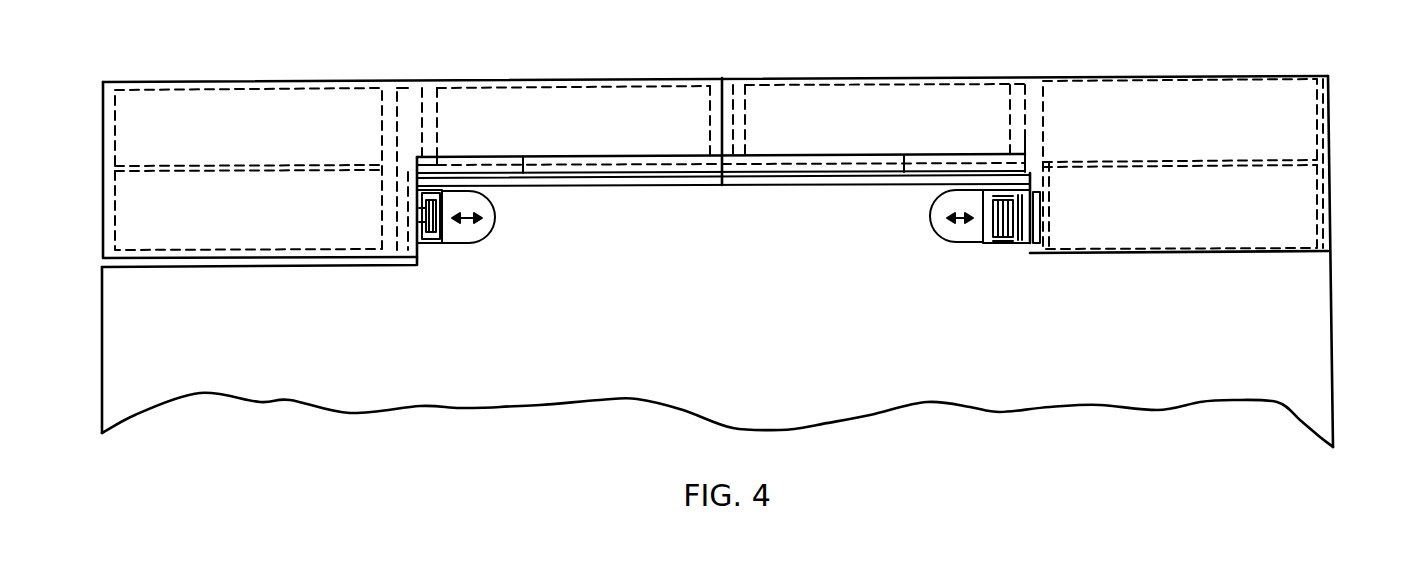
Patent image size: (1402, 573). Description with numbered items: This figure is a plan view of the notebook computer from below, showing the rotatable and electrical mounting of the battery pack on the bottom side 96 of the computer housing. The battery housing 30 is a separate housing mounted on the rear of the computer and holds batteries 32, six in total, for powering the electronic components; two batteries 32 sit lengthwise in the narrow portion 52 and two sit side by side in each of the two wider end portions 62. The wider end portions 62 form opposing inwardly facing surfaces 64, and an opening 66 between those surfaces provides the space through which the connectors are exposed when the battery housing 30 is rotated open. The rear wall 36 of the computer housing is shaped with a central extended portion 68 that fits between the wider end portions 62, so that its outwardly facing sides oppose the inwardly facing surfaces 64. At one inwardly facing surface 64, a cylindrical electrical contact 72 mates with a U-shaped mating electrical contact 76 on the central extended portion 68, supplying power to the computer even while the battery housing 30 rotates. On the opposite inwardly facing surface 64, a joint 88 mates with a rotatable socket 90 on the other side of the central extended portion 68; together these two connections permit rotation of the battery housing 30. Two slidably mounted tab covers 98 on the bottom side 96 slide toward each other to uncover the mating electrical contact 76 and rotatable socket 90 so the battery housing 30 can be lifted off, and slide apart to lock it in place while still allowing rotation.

The battery housing 30 is at (477, 78).
The batteries 32 is at (688, 90).
The rear wall 36 is at (574, 178).
The narrow portion 52 is at (557, 102).
The wider end portions 62 is at (223, 122).
The inwardly facing surfaces 64 is at (418, 252).
The opening 66 is at (638, 178).
The central extended portion 68 is at (758, 206).
The electrical contact 72 is at (1040, 207).
The mating electrical contact 76 is at (989, 243).
The joint 88 is at (418, 220).
The rotatable socket 90 is at (443, 228).
The bottom side 96 is at (1305, 368).
The tab covers 98 is at (480, 228).